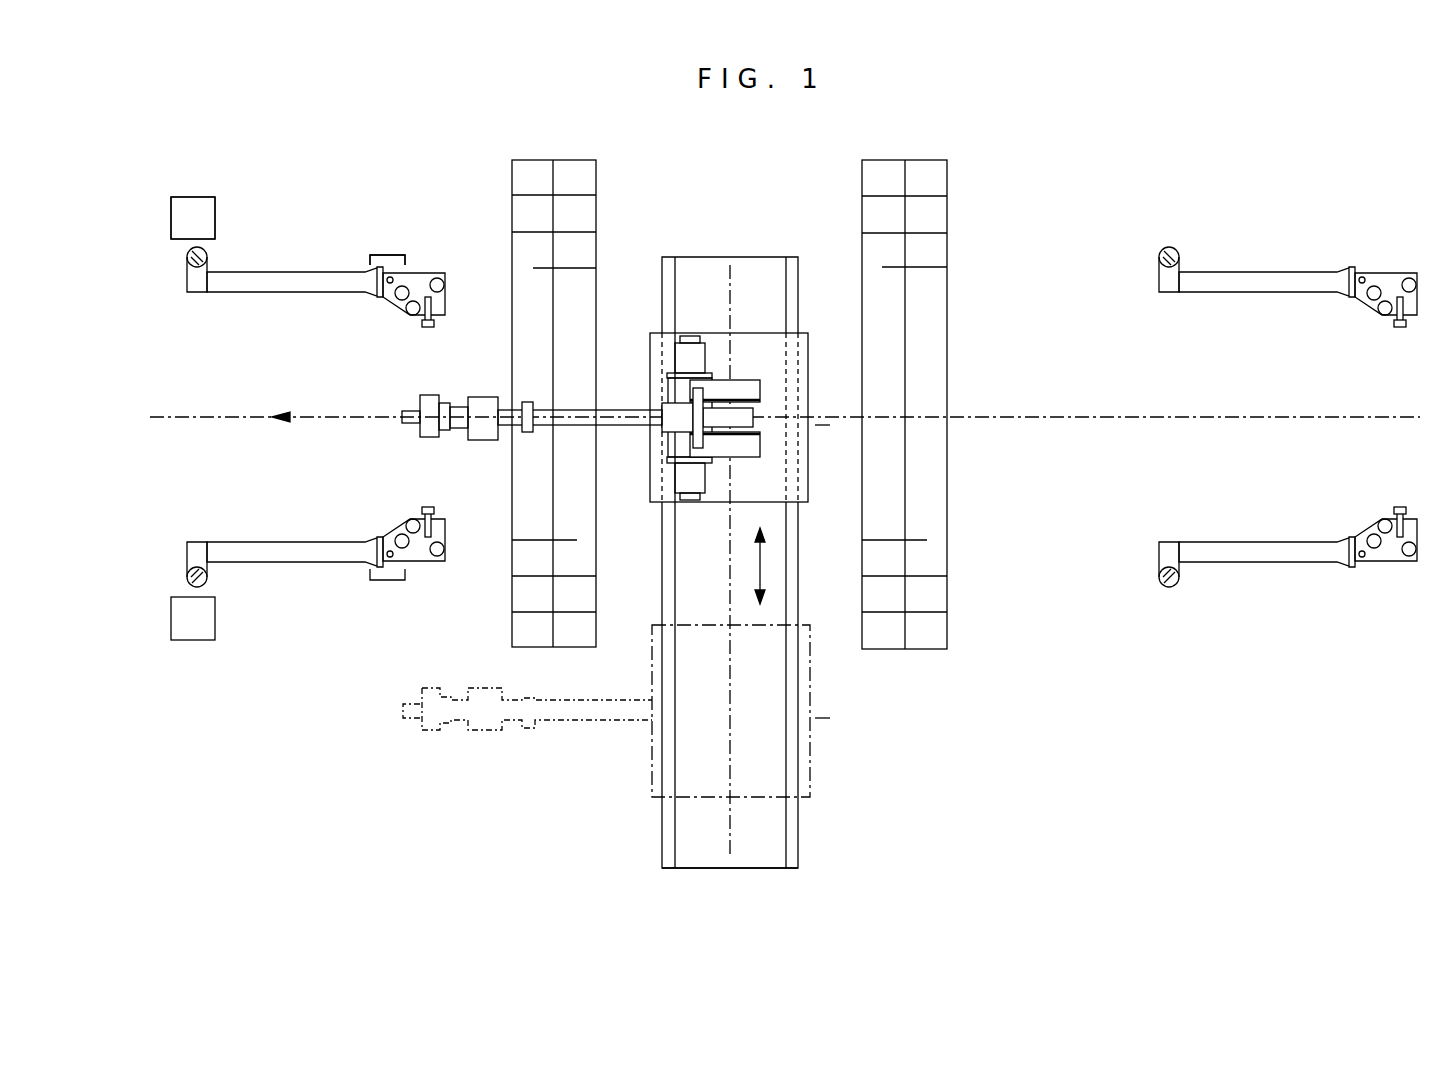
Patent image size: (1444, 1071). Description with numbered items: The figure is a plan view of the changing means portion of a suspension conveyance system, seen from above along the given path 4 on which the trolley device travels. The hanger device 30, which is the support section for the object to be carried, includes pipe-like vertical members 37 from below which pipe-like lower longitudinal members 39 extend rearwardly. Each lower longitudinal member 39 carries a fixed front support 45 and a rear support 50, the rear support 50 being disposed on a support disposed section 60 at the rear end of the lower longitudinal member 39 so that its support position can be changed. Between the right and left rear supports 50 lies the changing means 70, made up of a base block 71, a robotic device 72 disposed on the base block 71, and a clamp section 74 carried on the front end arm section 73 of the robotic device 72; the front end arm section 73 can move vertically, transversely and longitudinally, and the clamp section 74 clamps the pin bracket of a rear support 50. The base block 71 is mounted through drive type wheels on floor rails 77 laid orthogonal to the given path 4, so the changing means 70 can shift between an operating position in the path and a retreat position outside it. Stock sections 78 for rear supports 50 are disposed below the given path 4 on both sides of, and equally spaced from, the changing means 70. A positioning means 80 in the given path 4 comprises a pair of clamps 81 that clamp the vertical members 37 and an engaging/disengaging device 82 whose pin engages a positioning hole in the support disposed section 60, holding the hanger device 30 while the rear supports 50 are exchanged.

The given path 4 is at (1027, 416).
The hanger device 30 is at (1337, 236).
The vertical member 37 is at (185, 260).
The lower longitudinal member 39 is at (272, 292).
The front support 45 is at (193, 290).
The rear support 50 is at (411, 328).
The support disposed section 60 is at (427, 268).
The changing means 70 is at (750, 318).
The base block 71 is at (772, 333).
The robotic device 72 is at (659, 450).
The front end arm section 73 is at (432, 394).
The clamp section 74 is at (410, 424).
The floor rail 77 is at (668, 838).
The stock section 78 is at (558, 156).
The positioning means 80 is at (370, 182).
The clamp 81 is at (226, 214).
The engaging/disengaging device 82 is at (381, 244).